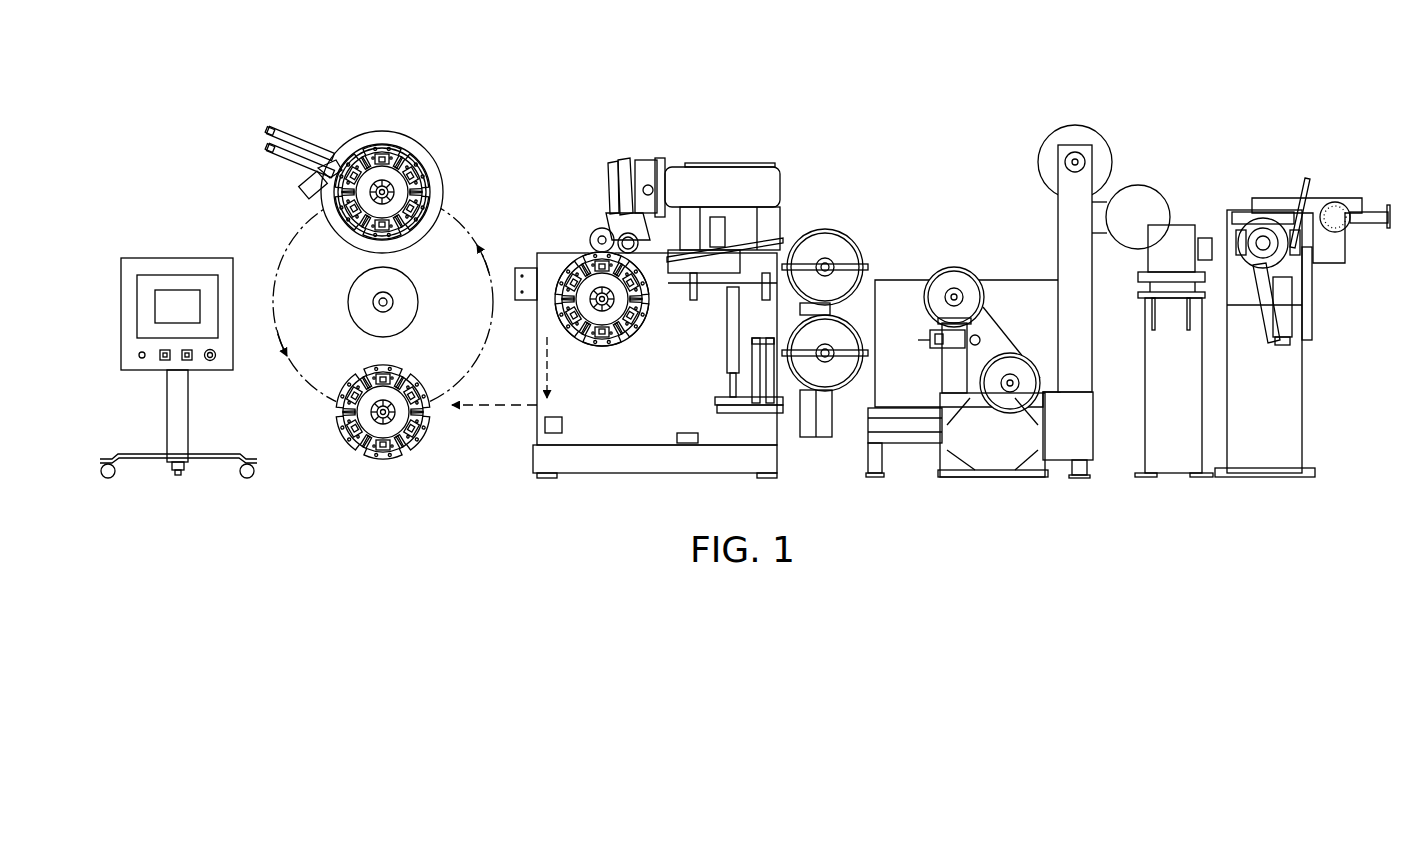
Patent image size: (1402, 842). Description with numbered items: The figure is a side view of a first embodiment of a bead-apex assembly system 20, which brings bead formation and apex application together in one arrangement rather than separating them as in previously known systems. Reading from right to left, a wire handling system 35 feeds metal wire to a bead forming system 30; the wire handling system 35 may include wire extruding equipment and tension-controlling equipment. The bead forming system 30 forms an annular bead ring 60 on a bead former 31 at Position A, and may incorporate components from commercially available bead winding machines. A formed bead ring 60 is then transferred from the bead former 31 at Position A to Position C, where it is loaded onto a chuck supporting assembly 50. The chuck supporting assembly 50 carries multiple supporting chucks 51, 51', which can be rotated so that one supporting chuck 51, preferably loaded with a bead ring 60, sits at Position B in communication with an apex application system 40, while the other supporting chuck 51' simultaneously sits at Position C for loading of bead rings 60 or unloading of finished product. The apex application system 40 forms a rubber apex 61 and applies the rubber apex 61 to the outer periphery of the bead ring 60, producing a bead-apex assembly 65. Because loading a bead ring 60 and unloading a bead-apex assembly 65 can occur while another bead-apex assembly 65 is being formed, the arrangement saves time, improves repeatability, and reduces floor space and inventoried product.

The bead-apex assembly system 20 is at (218, 90).
The bead forming system 30 is at (745, 160).
The bead former 31 is at (644, 350).
The wire handling system 35 is at (1093, 142).
The apex application system 40 is at (346, 113).
The chuck supporting assembly 50 is at (343, 266).
The supporting chuck 51 is at (386, 373).
The supporting chuck 51' is at (413, 186).
The bead ring 60 is at (432, 187).
The rubber apex 61 is at (410, 143).
The bead-apex assembly 65 is at (388, 131).